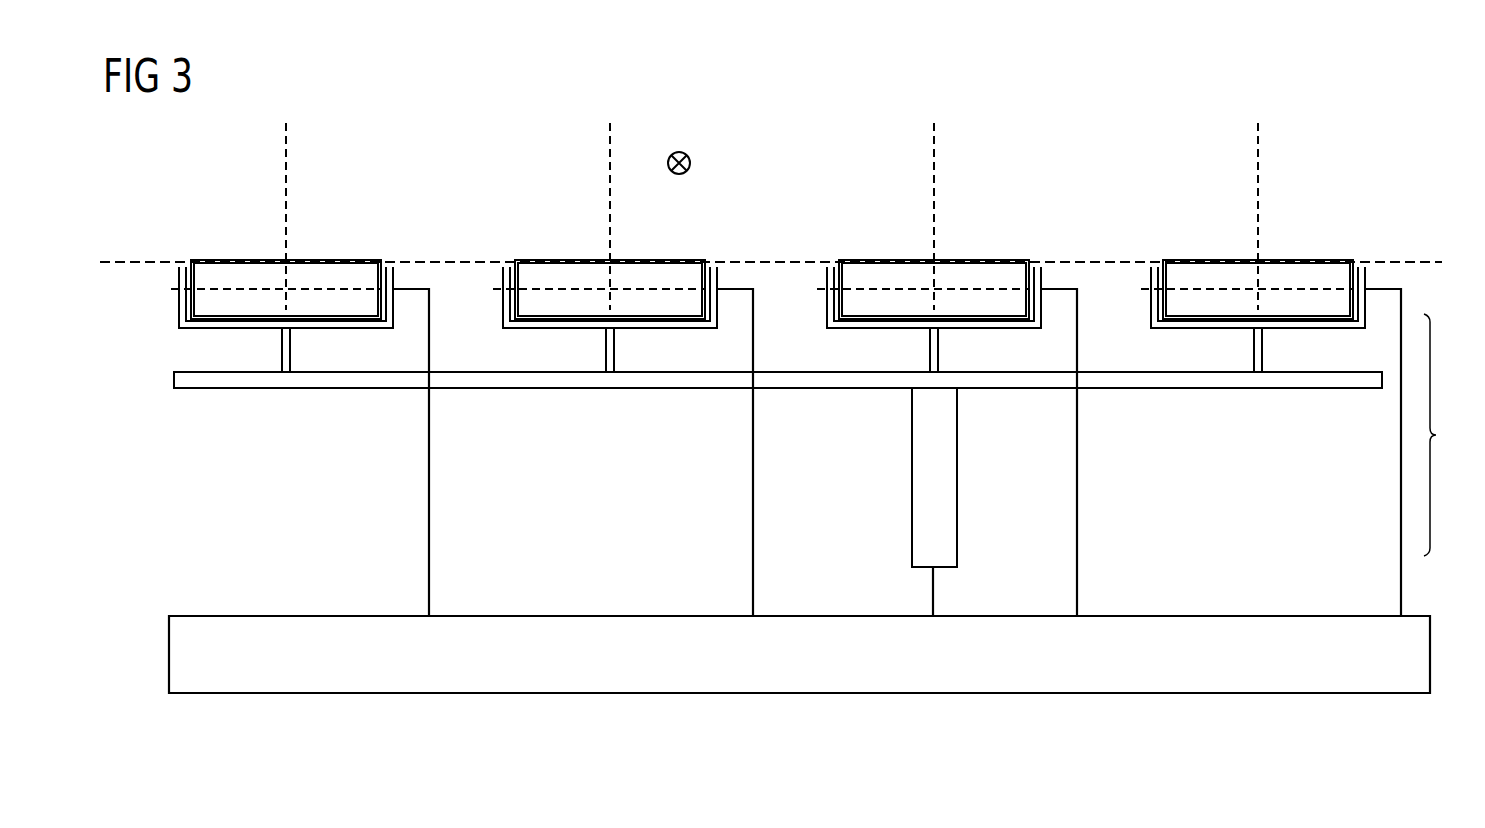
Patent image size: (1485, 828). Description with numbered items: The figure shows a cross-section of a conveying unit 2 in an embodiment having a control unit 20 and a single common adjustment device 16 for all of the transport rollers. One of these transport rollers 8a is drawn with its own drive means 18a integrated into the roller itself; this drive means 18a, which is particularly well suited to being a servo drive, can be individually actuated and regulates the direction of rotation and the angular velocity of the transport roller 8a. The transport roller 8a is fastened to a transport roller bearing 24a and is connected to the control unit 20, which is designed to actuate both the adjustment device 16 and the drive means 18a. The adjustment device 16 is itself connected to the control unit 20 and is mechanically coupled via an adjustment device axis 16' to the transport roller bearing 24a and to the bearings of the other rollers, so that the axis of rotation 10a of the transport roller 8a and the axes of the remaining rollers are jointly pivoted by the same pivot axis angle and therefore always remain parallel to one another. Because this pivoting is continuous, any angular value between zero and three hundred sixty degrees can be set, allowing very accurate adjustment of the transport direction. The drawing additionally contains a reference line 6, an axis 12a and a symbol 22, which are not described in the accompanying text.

The conveying unit 2 is at (1400, 143).
The reference plane 6 is at (771, 261).
The transport roller 8a is at (333, 258).
The axis of rotation 10a is at (178, 290).
The axis 12a is at (289, 143).
The adjustment device 16 is at (1191, 465).
The adjustment device axis 16' is at (778, 419).
The drive means 18a is at (228, 272).
The control unit 20 is at (1230, 614).
The direction symbol 22 is at (680, 151).
The transport roller bearing 24a is at (393, 275).